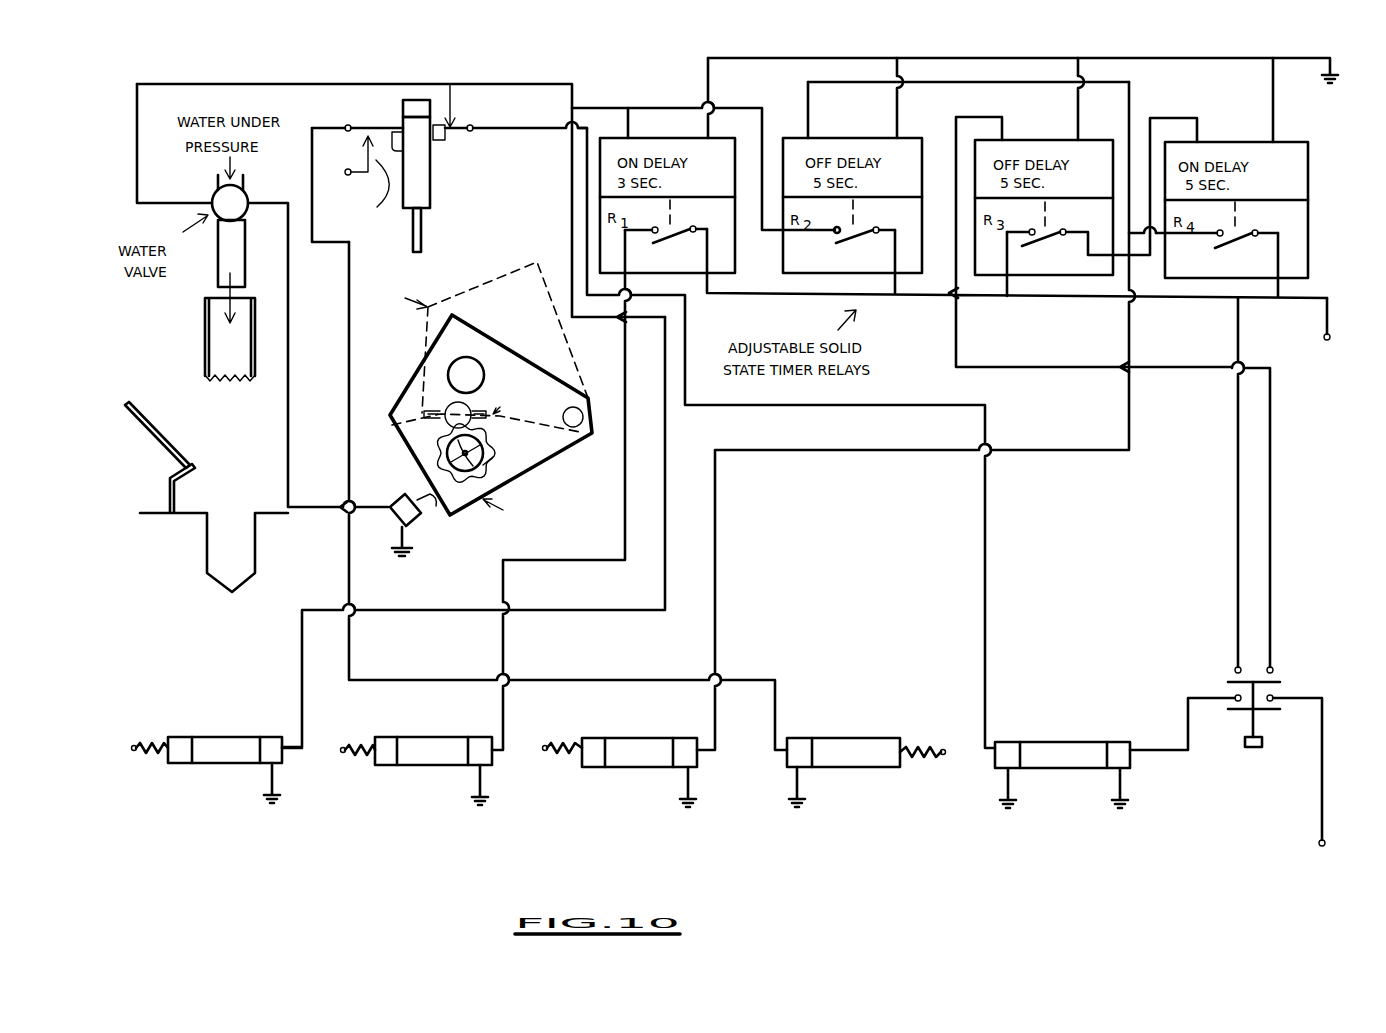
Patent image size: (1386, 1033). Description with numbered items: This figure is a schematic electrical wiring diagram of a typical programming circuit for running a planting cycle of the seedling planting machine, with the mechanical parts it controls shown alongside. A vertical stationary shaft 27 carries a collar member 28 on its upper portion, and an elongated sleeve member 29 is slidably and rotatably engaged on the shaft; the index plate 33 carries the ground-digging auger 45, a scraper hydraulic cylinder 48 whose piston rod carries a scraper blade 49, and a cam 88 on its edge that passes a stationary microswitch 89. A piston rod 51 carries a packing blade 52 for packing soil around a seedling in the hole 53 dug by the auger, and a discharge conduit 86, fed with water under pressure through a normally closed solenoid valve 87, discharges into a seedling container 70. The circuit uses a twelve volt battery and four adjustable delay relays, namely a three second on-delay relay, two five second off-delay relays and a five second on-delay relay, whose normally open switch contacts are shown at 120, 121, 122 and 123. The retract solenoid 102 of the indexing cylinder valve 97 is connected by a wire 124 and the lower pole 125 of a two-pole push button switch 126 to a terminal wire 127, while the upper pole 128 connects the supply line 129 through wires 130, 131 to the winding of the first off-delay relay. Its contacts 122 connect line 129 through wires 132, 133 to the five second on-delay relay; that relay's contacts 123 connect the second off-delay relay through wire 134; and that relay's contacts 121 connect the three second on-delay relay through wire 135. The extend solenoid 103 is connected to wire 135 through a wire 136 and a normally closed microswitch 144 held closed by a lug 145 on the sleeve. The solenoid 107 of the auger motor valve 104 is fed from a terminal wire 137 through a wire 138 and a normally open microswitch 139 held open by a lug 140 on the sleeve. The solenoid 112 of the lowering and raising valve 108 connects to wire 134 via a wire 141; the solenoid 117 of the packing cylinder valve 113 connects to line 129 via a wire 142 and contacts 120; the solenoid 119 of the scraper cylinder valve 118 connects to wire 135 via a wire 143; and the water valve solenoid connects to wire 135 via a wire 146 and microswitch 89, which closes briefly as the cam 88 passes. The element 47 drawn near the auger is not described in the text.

The vertical stationary shaft 27 is at (422, 232).
The collar member 28 is at (403, 110).
The sleeve member 29 is at (432, 186).
The index plate 33 is at (510, 354).
The ground-digging auger 45 is at (448, 458).
The roller 47 is at (461, 358).
The scraper hydraulic cylinder 48 is at (447, 405).
The scraper blade 49 is at (393, 428).
The piston rod 51 is at (125, 426).
The packing blade 52 is at (166, 488).
The hole 53 is at (255, 535).
The seedling container 70 is at (205, 345).
The discharge conduit 86 is at (245, 260).
The solenoid valve 87 is at (246, 196).
The cam 88 is at (437, 512).
The microswitch 89 is at (395, 525).
The indexing cylinder valve 97 is at (1085, 742).
The retract solenoid 102 is at (1120, 745).
The extend solenoid 103 is at (1003, 757).
The auger motor valve 104 is at (866, 738).
The solenoid 107 is at (795, 757).
The index plate lowering and raising valve 108 is at (626, 738).
The solenoid 112 is at (690, 758).
The packing cylinder valve 113 is at (410, 737).
The solenoid 117 is at (474, 737).
The scraper cylinder valve 118 is at (205, 737).
The solenoid 119 is at (270, 740).
The switch contacts 120 is at (676, 221).
The switch contacts 121 is at (876, 230).
The switch contacts 122 is at (1053, 224).
The switch contacts 123 is at (1226, 225).
The wire 124 is at (1175, 752).
The lower pole 125 is at (1262, 710).
The push button switch 126 is at (1248, 732).
The +12 volt terminal wire 127 is at (1323, 827).
The upper pole 128 is at (1282, 684).
The +12 volt line 129 is at (1208, 301).
The wire 130 is at (1236, 478).
The wire 131 is at (1052, 367).
The wire 132 is at (1008, 265).
The wire 133 is at (1170, 117).
The wire 134 is at (923, 83).
The wire 135 is at (652, 106).
The wire 136 is at (987, 541).
The +12 volt terminal wire 137 is at (360, 186).
The wire 138 is at (590, 678).
The microswitch 139 is at (352, 132).
The lug 140 is at (419, 149).
The wire 141 is at (790, 450).
The wire 142 is at (565, 562).
The wire 143 is at (420, 611).
The microswitch 144 is at (474, 132).
The lug 145 is at (448, 140).
The wire 146 is at (290, 390).